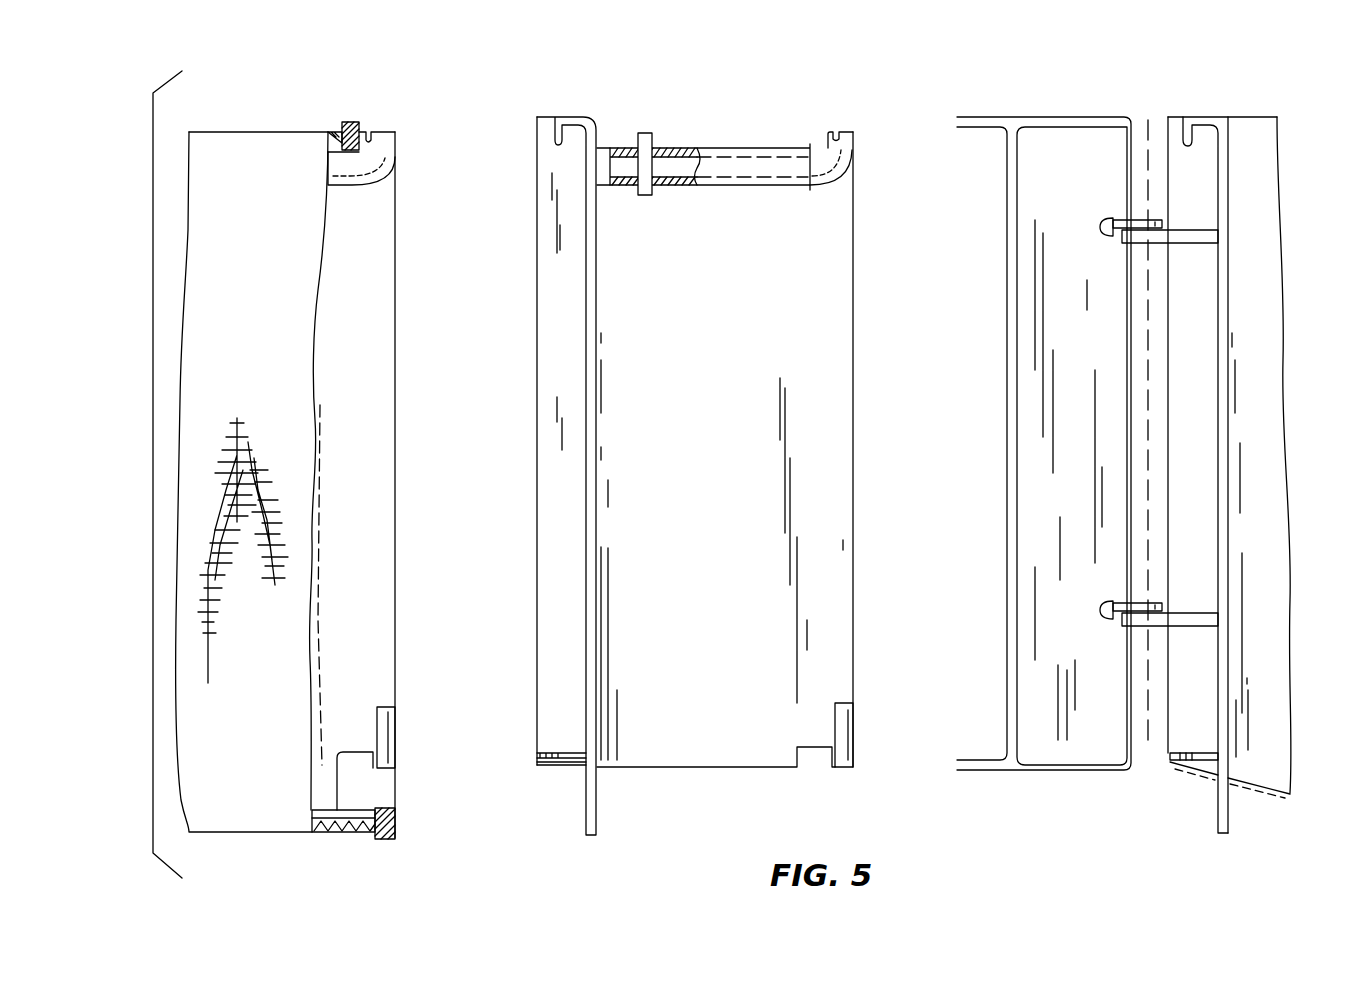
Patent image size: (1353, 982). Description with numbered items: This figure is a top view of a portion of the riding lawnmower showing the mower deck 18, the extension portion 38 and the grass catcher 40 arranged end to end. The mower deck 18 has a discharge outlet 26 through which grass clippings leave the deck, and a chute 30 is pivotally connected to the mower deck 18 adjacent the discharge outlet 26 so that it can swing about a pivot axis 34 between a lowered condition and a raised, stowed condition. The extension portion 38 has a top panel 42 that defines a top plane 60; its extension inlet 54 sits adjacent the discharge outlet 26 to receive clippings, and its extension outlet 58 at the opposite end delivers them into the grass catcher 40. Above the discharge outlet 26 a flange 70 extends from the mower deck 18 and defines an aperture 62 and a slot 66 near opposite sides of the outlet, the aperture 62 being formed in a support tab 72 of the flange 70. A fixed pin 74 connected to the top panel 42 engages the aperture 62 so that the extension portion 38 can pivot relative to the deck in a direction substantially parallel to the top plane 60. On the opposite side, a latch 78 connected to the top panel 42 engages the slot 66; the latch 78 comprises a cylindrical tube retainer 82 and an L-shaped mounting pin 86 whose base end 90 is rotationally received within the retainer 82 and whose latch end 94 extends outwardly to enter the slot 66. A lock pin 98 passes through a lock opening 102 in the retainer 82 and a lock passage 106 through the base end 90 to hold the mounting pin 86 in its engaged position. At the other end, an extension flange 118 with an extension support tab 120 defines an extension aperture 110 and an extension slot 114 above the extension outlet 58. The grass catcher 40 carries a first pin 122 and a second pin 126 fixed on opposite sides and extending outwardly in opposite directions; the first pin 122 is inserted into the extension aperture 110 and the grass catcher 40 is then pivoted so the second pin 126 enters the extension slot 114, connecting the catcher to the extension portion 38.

The mower deck 18 is at (1202, 450).
The discharge outlet 26 is at (1170, 743).
The chute 30 is at (1083, 116).
The pivot axis 34 is at (1150, 332).
The extension portion 38 is at (707, 766).
The grass catcher 40 is at (287, 131).
The top panel 42 is at (843, 545).
The extension inlet 54 is at (853, 416).
The extension outlet 58 is at (537, 522).
The top plane 60 is at (696, 567).
The aperture 62 is at (1210, 768).
The slot 66 is at (1203, 122).
The flange 70 is at (1228, 330).
The support tab 72 is at (1183, 756).
The fixed pin 74 is at (855, 722).
The latch 78 is at (744, 157).
The retainer 82 is at (750, 186).
The mounting pin 86 is at (816, 176).
The base end 90 is at (681, 165).
The latch end 94 is at (838, 131).
The lock pin 98 is at (647, 134).
The lock opening 102 is at (658, 147).
The lock passage 106 is at (663, 186).
The extension aperture 110 is at (577, 766).
The extension slot 114 is at (565, 116).
The extension flange 118 is at (601, 382).
The extension support tab 120 is at (550, 752).
The first pin 122 is at (394, 741).
The second pin 126 is at (372, 131).